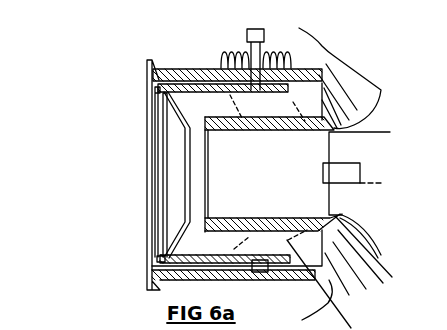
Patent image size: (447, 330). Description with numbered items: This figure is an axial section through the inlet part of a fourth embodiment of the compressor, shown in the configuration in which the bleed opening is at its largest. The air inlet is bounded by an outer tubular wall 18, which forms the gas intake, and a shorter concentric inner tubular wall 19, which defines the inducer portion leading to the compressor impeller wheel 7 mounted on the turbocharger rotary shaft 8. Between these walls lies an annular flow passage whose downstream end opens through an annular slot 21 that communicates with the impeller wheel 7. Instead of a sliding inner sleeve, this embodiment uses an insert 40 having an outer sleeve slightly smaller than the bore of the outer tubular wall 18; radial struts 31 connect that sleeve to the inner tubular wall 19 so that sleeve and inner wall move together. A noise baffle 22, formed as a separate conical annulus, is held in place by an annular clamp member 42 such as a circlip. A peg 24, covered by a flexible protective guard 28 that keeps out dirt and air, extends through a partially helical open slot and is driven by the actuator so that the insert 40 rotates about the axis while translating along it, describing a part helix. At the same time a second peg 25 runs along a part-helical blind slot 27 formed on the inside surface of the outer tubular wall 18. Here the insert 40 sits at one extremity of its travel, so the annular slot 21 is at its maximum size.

The outer tubular wall 18 is at (148, 78).
The insert 40 is at (156, 90).
The noise baffle 22 is at (177, 124).
The inner tubular wall 19 is at (256, 132).
The protective guard 28 is at (223, 62).
The peg 24 is at (250, 31).
The radial struts 31 is at (286, 102).
The annular slot 21 is at (351, 123).
The compressor impeller wheel 7 is at (375, 150).
The turbocharger rotary shaft 8 is at (360, 177).
The annular clamp member 42 is at (160, 256).
The peg 25 is at (263, 272).
The part-helical blind slot 27 is at (150, 266).